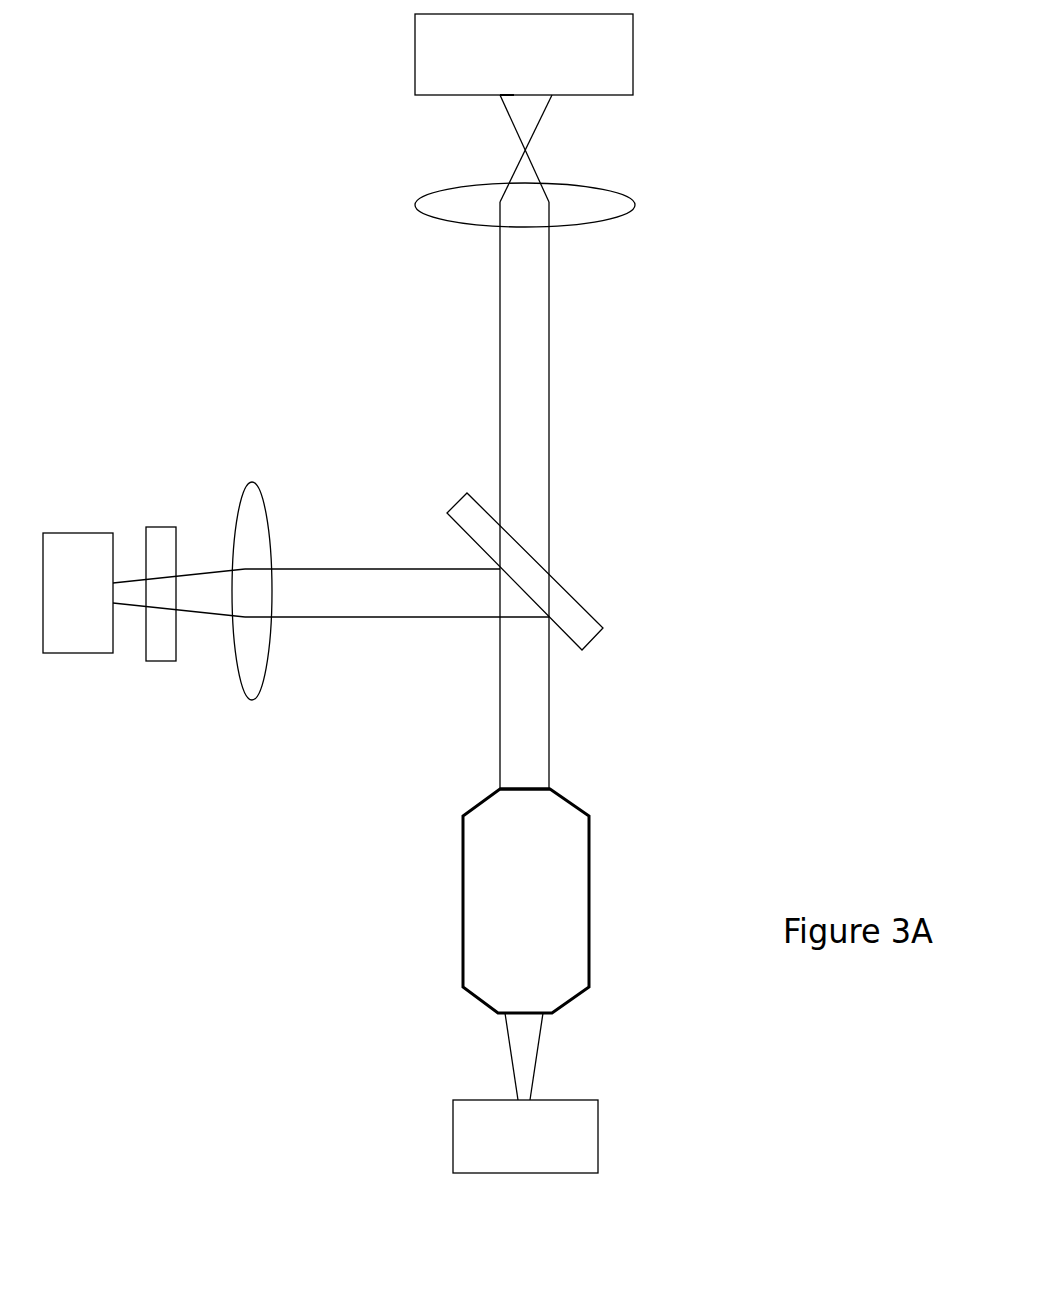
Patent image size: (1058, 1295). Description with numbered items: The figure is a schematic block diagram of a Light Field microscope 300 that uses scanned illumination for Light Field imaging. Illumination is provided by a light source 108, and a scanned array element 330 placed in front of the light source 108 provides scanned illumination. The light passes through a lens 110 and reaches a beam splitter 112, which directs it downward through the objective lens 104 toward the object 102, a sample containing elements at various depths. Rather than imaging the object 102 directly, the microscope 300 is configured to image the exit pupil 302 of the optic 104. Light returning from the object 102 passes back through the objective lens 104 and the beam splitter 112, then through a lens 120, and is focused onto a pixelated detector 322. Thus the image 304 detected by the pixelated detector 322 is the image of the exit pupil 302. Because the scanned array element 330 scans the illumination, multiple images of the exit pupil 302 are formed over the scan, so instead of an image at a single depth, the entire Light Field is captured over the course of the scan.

The Light Field microscope 300 is at (277, 908).
The pixelated detector 322 is at (524, 54).
The image 304 is at (513, 97).
The lens 120 is at (543, 195).
The beam splitter 112 is at (551, 571).
The light source 108 is at (64, 562).
The scanned array element 330 is at (157, 608).
The lens 110 is at (257, 569).
The objective lens 104 is at (526, 901).
The exit pupil 302 is at (525, 788).
The object 102 is at (525, 1136).